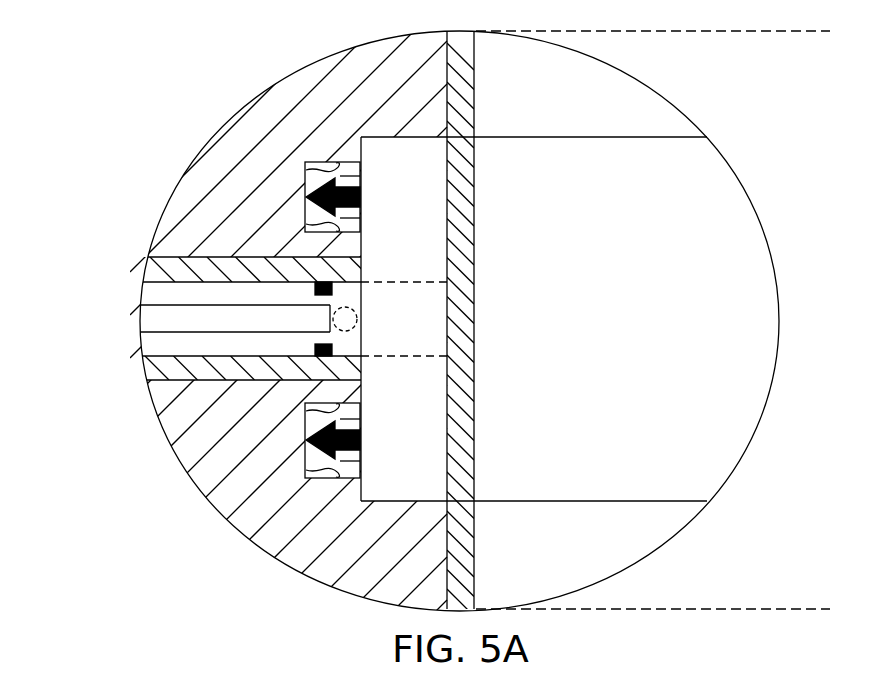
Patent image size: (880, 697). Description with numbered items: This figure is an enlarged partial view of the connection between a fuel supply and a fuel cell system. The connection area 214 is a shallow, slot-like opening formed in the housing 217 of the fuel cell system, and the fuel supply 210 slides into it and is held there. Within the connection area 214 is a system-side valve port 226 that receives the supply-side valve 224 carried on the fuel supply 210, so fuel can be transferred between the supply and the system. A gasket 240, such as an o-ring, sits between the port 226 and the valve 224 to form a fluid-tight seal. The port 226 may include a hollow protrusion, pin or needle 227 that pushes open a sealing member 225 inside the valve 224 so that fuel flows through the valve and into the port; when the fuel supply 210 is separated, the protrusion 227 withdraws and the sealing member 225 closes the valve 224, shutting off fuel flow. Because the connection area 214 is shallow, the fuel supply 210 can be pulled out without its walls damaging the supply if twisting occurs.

The fuel supply 210 is at (633, 317).
The connection area 214 is at (684, 100).
The housing 217 is at (822, 174).
The supply-side valve 224 is at (338, 304).
The ball joint 225 is at (358, 316).
The system-side valve port 226 is at (168, 372).
The protrusion 227 is at (163, 318).
The gasket 240 is at (325, 399).